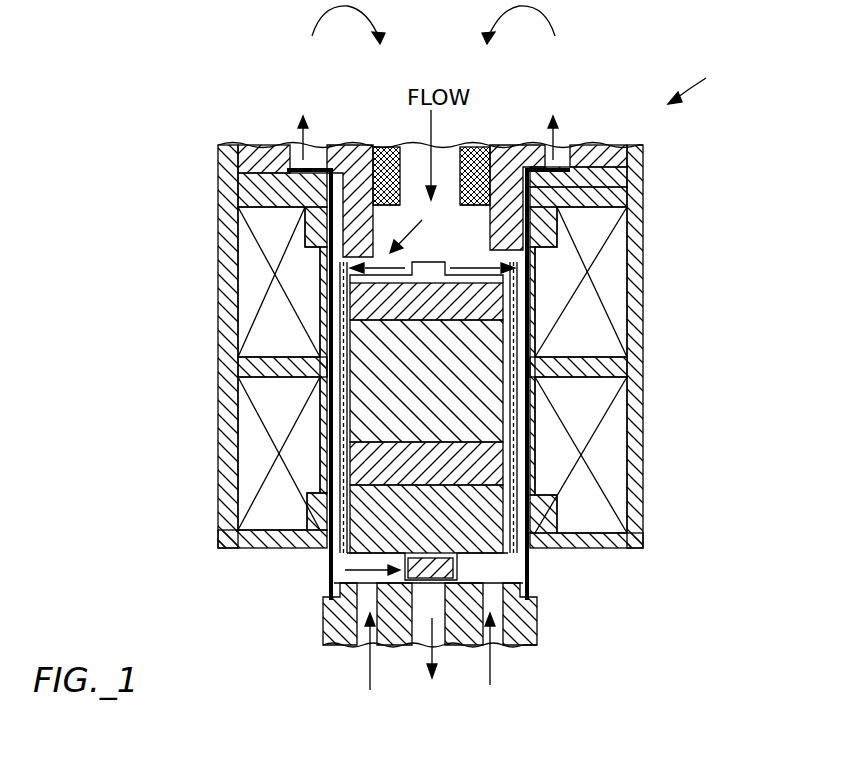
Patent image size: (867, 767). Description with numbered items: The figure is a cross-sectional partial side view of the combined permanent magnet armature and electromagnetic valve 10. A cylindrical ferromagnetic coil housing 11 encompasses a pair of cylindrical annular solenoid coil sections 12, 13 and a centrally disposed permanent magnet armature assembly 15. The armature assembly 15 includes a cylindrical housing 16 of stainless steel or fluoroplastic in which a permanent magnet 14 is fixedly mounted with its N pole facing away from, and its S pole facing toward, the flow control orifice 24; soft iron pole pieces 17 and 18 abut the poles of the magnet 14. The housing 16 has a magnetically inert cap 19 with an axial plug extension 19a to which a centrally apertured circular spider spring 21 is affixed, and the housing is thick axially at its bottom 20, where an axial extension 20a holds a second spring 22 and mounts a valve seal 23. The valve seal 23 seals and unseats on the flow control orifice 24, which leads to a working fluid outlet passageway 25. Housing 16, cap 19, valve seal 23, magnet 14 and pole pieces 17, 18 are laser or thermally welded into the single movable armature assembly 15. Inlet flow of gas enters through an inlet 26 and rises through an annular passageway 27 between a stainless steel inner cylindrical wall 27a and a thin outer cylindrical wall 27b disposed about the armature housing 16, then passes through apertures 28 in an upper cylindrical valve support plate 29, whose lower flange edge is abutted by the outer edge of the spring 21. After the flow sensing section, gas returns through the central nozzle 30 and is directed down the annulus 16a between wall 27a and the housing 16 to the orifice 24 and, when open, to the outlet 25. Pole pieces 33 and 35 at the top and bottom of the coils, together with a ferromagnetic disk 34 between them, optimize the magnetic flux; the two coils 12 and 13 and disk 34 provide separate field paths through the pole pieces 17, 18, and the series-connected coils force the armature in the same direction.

The valve 10 is at (710, 82).
The coil housing 11 is at (633, 328).
The solenoid coil section 12 is at (613, 277).
The solenoid coil section 13 is at (610, 442).
The permanent magnet 14 is at (483, 410).
The permanent magnet armature assembly 15 is at (562, 245).
The cylindrical housing 16 is at (493, 300).
The annulus 16a is at (323, 267).
The pole piece 17 is at (533, 297).
The pole piece 18 is at (487, 477).
The cap 19 is at (368, 150).
The axial plug extension 19a is at (452, 262).
The housing bottom 20 is at (338, 550).
The axial extension 20a is at (323, 598).
The spider spring 21 is at (483, 262).
The second spring 22 is at (535, 562).
The valve seal 23 is at (427, 556).
The flow control orifice 24 is at (535, 608).
The working fluid outlet passageway 25 is at (417, 622).
The inlet 26 is at (363, 643).
The annular passageway 27 is at (340, 472).
The inner cylindrical wall 27a is at (322, 290).
The outer cylindrical wall 27b is at (325, 330).
The apertures 28 is at (297, 143).
The valve support plate 29 is at (257, 155).
The central nozzle 30 is at (387, 150).
The pole piece 33 is at (640, 182).
The ferromagnetic disk 34 is at (607, 368).
The pole piece 35 is at (620, 550).